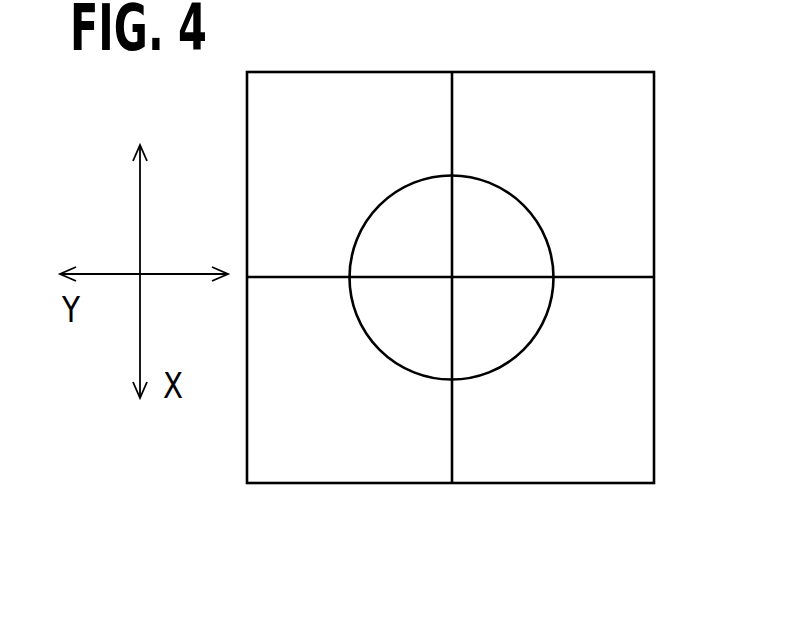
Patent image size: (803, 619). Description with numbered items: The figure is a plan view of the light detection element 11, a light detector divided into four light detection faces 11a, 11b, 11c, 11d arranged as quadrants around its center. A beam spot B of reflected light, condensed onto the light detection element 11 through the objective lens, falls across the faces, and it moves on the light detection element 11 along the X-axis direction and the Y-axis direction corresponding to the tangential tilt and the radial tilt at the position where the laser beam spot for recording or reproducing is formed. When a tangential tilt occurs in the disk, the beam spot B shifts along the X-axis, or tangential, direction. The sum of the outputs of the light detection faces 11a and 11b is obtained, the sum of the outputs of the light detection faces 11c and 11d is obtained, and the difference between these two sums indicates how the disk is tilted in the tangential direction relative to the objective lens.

The light detection element 11 is at (668, 147).
The light detection face 11a is at (348, 90).
The light detection face 11b is at (550, 92).
The light detection face 11c is at (348, 468).
The light detection face 11d is at (554, 470).
The beam spot B is at (543, 328).